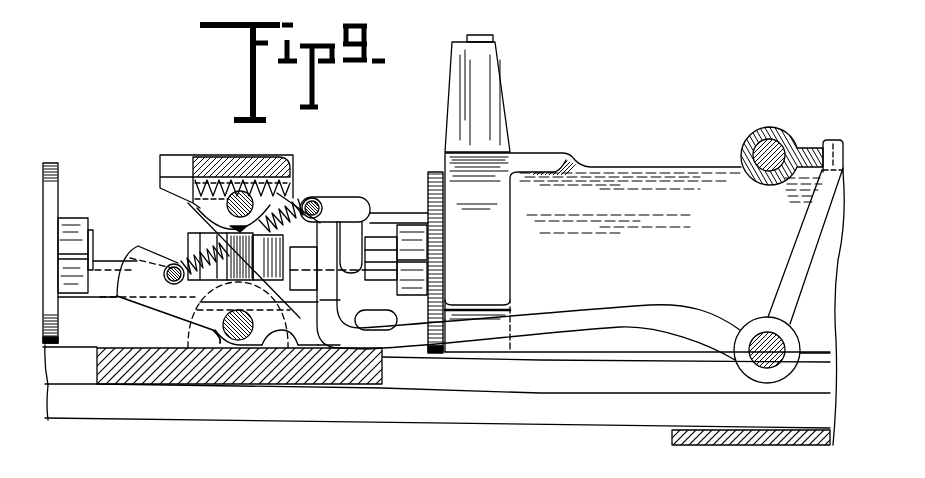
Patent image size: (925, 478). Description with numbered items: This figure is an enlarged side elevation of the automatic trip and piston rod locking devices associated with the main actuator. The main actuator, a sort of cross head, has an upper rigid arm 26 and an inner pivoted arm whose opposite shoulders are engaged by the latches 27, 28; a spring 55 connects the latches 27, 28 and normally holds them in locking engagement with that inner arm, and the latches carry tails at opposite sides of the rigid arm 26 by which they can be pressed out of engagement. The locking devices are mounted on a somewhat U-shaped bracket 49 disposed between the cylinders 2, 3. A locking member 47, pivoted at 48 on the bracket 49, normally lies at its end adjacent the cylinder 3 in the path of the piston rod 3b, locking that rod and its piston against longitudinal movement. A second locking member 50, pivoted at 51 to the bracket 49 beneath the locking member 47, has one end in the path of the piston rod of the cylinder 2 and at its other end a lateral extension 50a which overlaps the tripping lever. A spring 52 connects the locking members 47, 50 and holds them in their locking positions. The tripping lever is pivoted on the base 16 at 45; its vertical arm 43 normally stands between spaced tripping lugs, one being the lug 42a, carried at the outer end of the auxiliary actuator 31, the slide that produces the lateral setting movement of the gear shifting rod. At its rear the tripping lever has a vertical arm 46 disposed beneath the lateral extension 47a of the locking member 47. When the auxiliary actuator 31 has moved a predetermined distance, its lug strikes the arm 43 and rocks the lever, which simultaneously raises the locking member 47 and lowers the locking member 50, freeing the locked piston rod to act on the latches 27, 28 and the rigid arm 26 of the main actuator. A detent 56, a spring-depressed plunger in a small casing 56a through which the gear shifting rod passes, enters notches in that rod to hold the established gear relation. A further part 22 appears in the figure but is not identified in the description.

The cylinder 2 is at (58, 222).
The cylinder 3 is at (632, 187).
The piston rod 3b is at (385, 255).
The base 16 is at (612, 384).
The lever 22 is at (331, 312).
The upper rigid arm 26 is at (205, 234).
The latch 27 is at (317, 282).
The latch 28 is at (213, 283).
The auxiliary actuator 31 is at (763, 127).
The tripping lug 42a is at (834, 139).
The vertical arm 43 is at (796, 246).
The pivot 45 is at (767, 367).
The vertical arm 46 is at (330, 315).
The locking member 47 is at (350, 240).
The lateral extension 47a is at (340, 207).
The pivot 48 is at (248, 158).
The U-shaped bracket 49 is at (262, 188).
The second locking member 50 is at (147, 287).
The lateral extension 50a is at (380, 321).
The pivot 51 is at (242, 341).
The spring 52 is at (300, 190).
The spring 55 is at (190, 152).
The detent 56 is at (490, 34).
The casing 56a is at (490, 107).